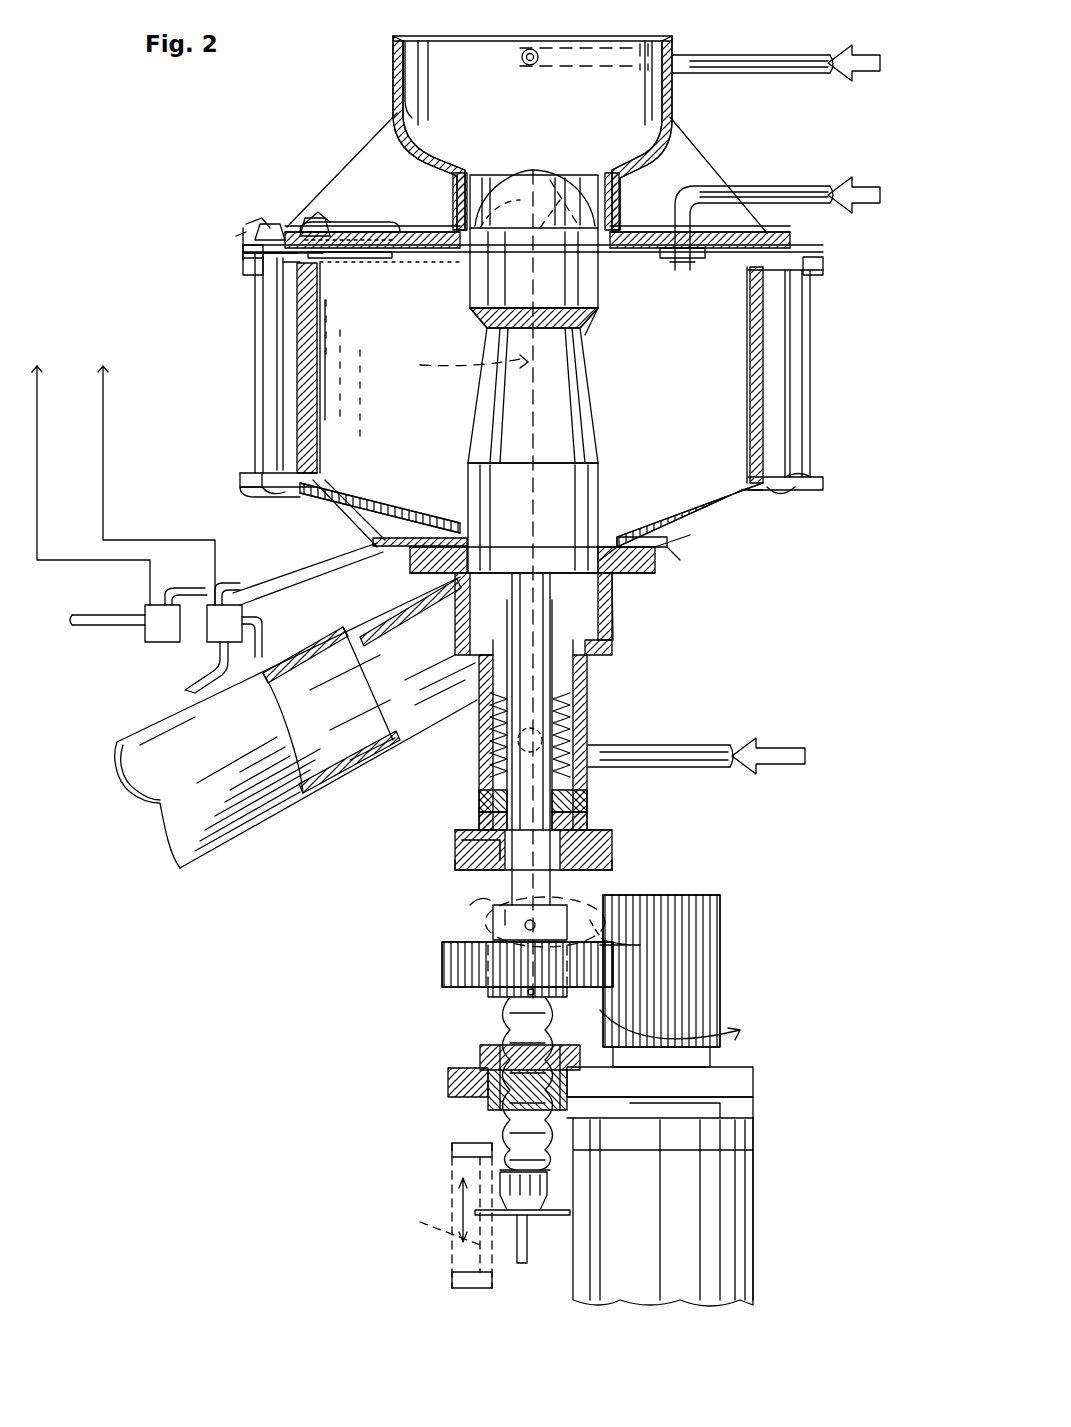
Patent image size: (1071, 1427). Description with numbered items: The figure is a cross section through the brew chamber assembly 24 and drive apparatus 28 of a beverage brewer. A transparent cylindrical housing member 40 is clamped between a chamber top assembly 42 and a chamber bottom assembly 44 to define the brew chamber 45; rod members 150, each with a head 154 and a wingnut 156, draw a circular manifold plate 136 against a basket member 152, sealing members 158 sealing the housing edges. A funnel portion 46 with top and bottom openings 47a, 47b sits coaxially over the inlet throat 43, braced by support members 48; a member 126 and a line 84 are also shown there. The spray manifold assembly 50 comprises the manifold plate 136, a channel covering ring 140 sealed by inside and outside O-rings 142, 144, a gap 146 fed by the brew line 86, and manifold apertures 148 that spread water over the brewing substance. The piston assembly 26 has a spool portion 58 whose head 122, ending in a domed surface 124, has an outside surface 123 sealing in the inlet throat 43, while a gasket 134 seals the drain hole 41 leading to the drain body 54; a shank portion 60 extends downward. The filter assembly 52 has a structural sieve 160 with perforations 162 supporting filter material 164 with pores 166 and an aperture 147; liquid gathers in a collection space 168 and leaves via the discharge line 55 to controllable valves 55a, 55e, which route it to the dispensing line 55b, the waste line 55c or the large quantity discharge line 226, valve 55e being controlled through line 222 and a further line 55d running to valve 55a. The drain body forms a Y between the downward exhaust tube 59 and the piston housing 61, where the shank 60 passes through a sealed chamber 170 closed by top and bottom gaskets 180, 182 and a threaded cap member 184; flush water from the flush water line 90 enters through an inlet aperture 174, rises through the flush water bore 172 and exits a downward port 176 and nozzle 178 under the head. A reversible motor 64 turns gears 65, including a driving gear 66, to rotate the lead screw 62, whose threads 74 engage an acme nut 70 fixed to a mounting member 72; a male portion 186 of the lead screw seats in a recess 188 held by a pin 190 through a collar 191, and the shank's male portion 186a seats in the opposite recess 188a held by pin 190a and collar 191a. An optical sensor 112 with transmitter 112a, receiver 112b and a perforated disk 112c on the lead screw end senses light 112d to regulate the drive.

The brew chamber assembly 24 is at (200, 162).
The piston assembly 26 is at (570, 588).
The drive apparatus 28 is at (352, 1132).
The housing member 40 is at (300, 405).
The drain hole 41 is at (470, 480).
The chamber top assembly 42 is at (233, 217).
The inlet throat 43 is at (608, 252).
The chamber bottom assembly 44 is at (200, 516).
The brew chamber 45 is at (388, 334).
The funnel portion 46 is at (403, 65).
The top opening 47a is at (410, 40).
The bottom opening 47b is at (452, 188).
The support members 48 is at (375, 140).
The spray manifold assembly 50 is at (236, 294).
The filter assembly 52 is at (318, 526).
The drain body 54 is at (618, 580).
The discharge line 55 is at (305, 562).
The discharge valve 55a is at (242, 612).
The dispensing line 55b is at (178, 680).
The waste line 55c is at (262, 647).
The control line 55d is at (106, 452).
The controllable valve 55e is at (140, 610).
The spool portion 58 is at (484, 412).
The exhaust tube 59 is at (380, 752).
The shank portion 60 is at (515, 905).
The piston housing 61 is at (590, 665).
The lead screw 62 is at (418, 1026).
The motor 64 is at (658, 1210).
The gears 65 is at (605, 926).
The driving gear 66 is at (722, 920).
The acme nut 70 is at (482, 1060).
The mounting member 72 is at (750, 1082).
The threads 74 is at (500, 1040).
The inlet pipe 84 is at (745, 58).
The brew line 86 is at (800, 180).
The flush water line 90 is at (725, 745).
The optical sensor 112 is at (392, 1233).
The light transmitter device 112a is at (452, 1150).
The receiver device 112b is at (452, 1280).
The disk 112c is at (550, 1220).
The light 112d is at (425, 1225).
The head 122 is at (498, 260).
The outside surface 123 is at (600, 312).
The domed surface 124 is at (502, 185).
The rod 126 is at (520, 16).
The gasket 134 is at (605, 580).
The manifold plate 136 is at (240, 257).
The channel covering ring 140 is at (310, 218).
The inside O-ring 142 is at (678, 272).
The outside O-ring 144 is at (700, 262).
The gap 146 is at (345, 247).
The aperture 147 is at (590, 540).
The manifold apertures 148 is at (375, 259).
The rod members 150 is at (262, 362).
The basket member 152 is at (725, 530).
The head 154 is at (238, 480).
The wingnut 156 is at (264, 224).
The sealing members 158 is at (300, 288).
The structural sieve 160 is at (710, 515).
The perforations 162 is at (660, 550).
The filter material 164 is at (724, 462).
The pores 166 is at (690, 463).
The collection space 168 is at (700, 540).
The sealed chamber 170 is at (425, 858).
The flush water bore 172 is at (465, 365).
The inlet aperture 174 is at (590, 730).
The port 176 is at (560, 205).
The nozzle 178 is at (590, 332).
The top gasket 180 is at (470, 720).
The bottom gasket 182 is at (485, 800).
The cap member 184 is at (460, 862).
The male portion 186 is at (445, 975).
The male portion 186a is at (662, 858).
The recess 188 is at (445, 962).
The recess 188a is at (590, 905).
The pin 190 is at (510, 1000).
The pin 190a is at (466, 914).
The collar 191 is at (500, 992).
The collar 191a is at (500, 945).
The line 222 is at (38, 455).
The large quantity discharge line 226 is at (110, 628).